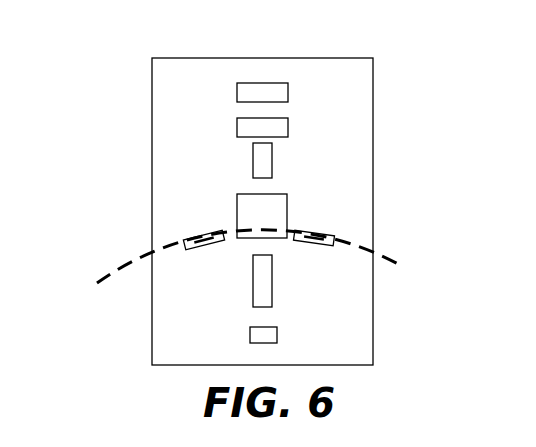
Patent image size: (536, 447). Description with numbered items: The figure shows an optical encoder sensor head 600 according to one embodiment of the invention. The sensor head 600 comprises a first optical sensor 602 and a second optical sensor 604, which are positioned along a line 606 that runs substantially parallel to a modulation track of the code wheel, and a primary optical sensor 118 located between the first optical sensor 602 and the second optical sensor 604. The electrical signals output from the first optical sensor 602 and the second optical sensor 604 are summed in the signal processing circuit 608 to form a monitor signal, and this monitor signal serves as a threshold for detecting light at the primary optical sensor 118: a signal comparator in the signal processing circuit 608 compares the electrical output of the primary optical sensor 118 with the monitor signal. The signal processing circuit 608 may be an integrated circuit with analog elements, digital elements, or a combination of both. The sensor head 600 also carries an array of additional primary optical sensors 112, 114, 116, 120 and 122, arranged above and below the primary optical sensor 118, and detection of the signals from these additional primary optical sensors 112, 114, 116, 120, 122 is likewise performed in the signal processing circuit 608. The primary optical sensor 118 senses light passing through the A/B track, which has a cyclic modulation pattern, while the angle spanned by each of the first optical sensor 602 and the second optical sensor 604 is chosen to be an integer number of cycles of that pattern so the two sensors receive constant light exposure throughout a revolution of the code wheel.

The sensor head 600 is at (300, 42).
The first optical sensor 602 is at (208, 232).
The second optical sensor 604 is at (318, 230).
The line 606 is at (131, 272).
The signal processing circuit 608 is at (173, 58).
The primary optical sensor 112 is at (288, 92).
The primary optical sensor 114 is at (288, 127).
The primary optical sensor 116 is at (272, 160).
The primary optical sensor 118 is at (287, 201).
The primary optical sensor 120 is at (272, 281).
The primary optical sensor 122 is at (277, 331).